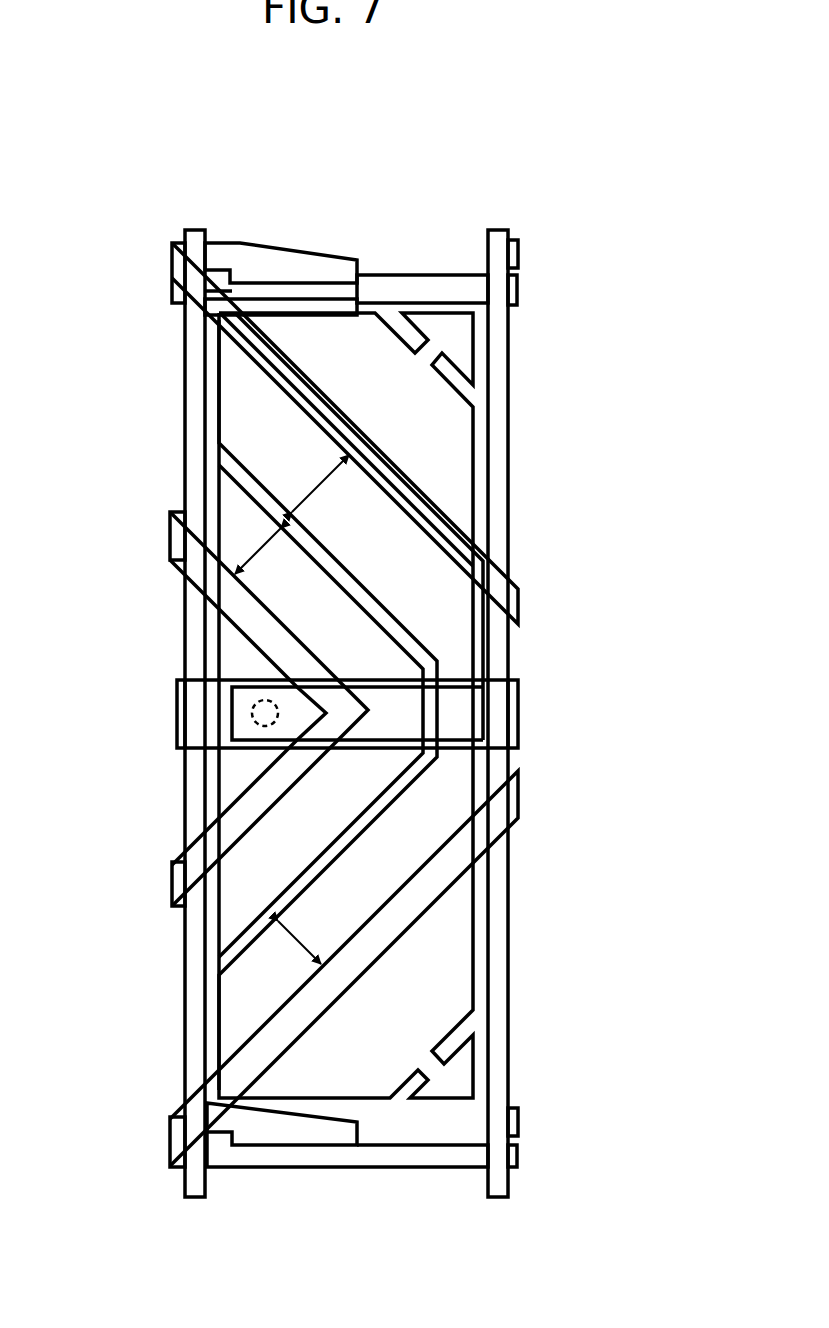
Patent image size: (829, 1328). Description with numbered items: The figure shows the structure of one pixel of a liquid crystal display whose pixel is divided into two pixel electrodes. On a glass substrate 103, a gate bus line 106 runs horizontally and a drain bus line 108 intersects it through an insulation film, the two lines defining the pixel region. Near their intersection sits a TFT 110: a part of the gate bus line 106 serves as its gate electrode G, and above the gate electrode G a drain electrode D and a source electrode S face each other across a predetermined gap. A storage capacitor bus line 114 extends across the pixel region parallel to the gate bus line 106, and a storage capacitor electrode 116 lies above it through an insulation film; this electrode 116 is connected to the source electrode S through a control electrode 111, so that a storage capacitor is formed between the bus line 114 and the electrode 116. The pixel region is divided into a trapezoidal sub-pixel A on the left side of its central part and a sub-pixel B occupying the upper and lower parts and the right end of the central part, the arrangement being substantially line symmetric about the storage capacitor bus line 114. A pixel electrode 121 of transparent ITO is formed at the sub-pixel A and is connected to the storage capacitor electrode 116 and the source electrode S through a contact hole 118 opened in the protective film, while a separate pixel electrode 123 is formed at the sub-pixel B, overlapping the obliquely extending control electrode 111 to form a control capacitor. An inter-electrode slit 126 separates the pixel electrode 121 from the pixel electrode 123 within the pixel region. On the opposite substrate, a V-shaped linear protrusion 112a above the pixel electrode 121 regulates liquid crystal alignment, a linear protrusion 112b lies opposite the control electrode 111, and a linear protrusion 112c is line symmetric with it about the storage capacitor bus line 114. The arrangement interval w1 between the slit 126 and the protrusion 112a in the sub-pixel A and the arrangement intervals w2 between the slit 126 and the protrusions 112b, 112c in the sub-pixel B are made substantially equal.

The glass substrate 103 is at (128, 193).
The gate bus line 106 is at (455, 272).
The drain bus line 108 is at (197, 1198).
The TFT 110 is at (261, 651).
The control electrode 111 is at (442, 522).
The linear protrusion 112a is at (109, 553).
The linear protrusion 112b is at (520, 605).
The linear protrusion 112c is at (520, 800).
The storage capacitor bus line 114 is at (520, 707).
The storage capacitor electrode 116 is at (230, 698).
The contact hole 118 is at (256, 718).
The pixel electrode 121 is at (208, 694).
The pixel electrode 123 is at (416, 705).
The inter-electrode slit 126 is at (261, 705).
The drain electrode D is at (262, 257).
The source electrode S is at (353, 300).
The gate electrode G is at (246, 291).
The sub-pixel A is at (228, 953).
The sub-pixel B is at (480, 393).
The arrangement interval w1 is at (258, 552).
The arrangement interval w2 is at (320, 485).